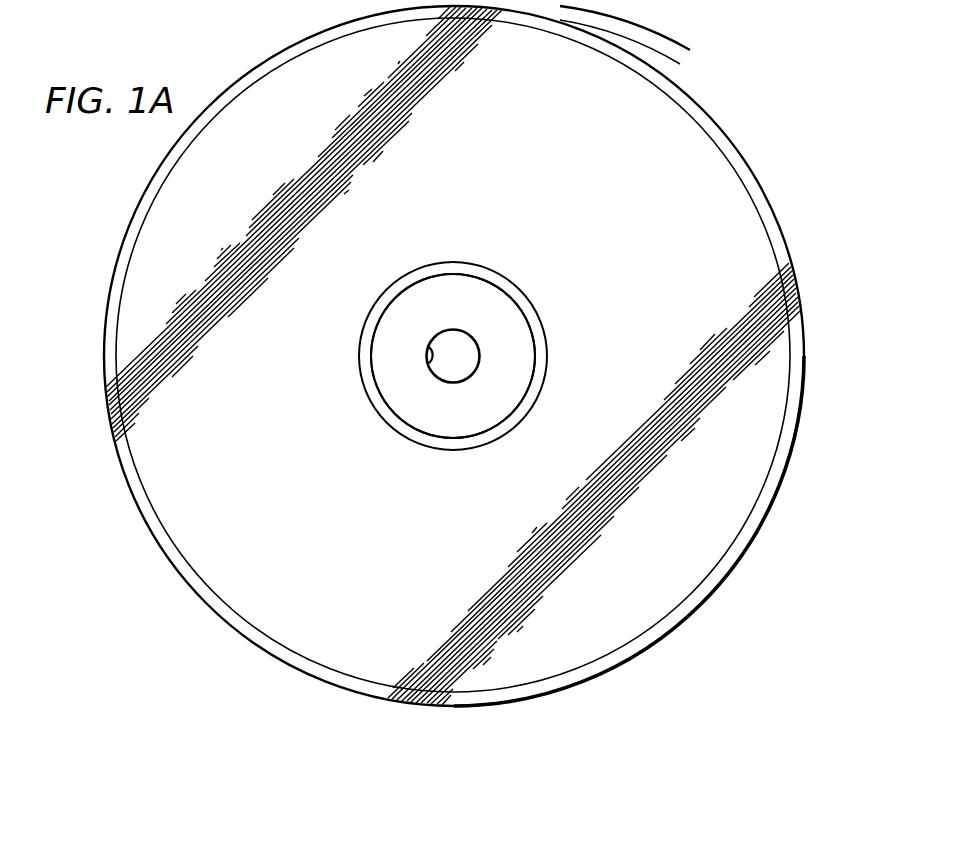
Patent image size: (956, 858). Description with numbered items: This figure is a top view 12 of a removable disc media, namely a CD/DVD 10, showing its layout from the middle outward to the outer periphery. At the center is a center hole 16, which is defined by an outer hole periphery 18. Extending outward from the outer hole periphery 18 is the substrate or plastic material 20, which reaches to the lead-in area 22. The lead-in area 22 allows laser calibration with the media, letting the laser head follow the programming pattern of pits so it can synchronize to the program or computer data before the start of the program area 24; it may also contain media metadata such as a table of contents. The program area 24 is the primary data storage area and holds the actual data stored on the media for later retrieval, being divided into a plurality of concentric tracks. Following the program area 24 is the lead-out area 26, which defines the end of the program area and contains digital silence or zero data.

The CD/DVD 10 is at (789, 157).
The top view 12 is at (117, 557).
The center hole 16 is at (464, 354).
The outer hole periphery 18 is at (432, 347).
The substrate or plastic material 20 is at (467, 421).
The lead-in area 22 is at (496, 435).
The program area 24 is at (317, 524).
The lead-out area 26 is at (613, 53).